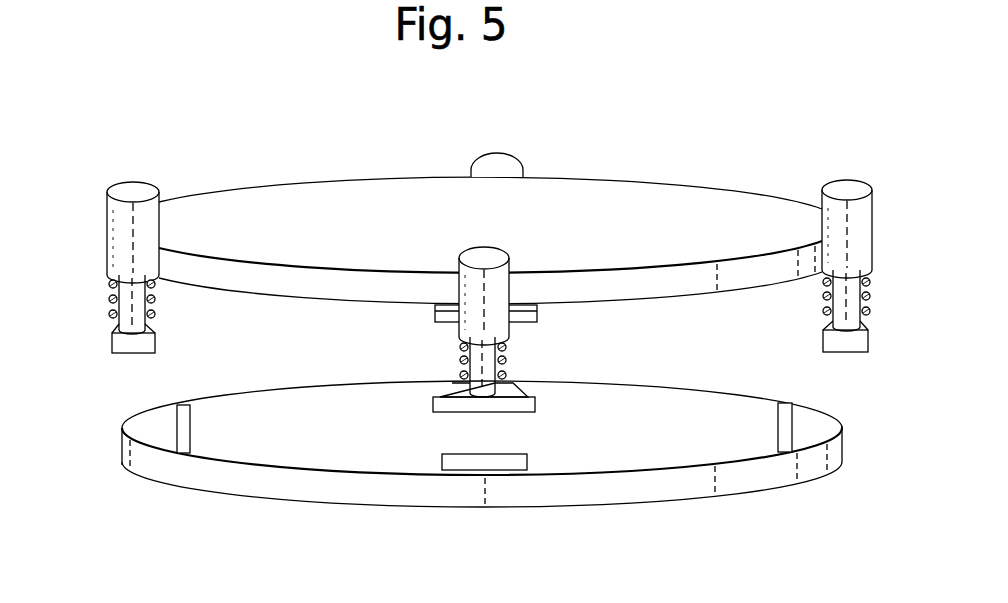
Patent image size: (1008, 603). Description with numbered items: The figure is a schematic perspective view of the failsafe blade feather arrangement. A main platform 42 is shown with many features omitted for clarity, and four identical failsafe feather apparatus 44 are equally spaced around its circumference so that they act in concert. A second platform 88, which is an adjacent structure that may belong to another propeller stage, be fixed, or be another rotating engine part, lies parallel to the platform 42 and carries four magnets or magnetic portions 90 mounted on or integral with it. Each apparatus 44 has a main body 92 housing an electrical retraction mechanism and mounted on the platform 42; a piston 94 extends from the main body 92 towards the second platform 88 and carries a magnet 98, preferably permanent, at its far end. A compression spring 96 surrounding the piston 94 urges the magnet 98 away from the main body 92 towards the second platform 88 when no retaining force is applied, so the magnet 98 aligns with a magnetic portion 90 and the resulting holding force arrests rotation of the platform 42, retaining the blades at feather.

The platform 42 is at (615, 232).
The failsafe feather apparatus 44 is at (140, 176).
The second platform 88 is at (645, 442).
The magnets or magnetic portions 90 is at (182, 427).
The main body 92 is at (118, 232).
The piston 94 is at (125, 298).
The compression spring 96 is at (157, 285).
The magnet 98 is at (118, 342).